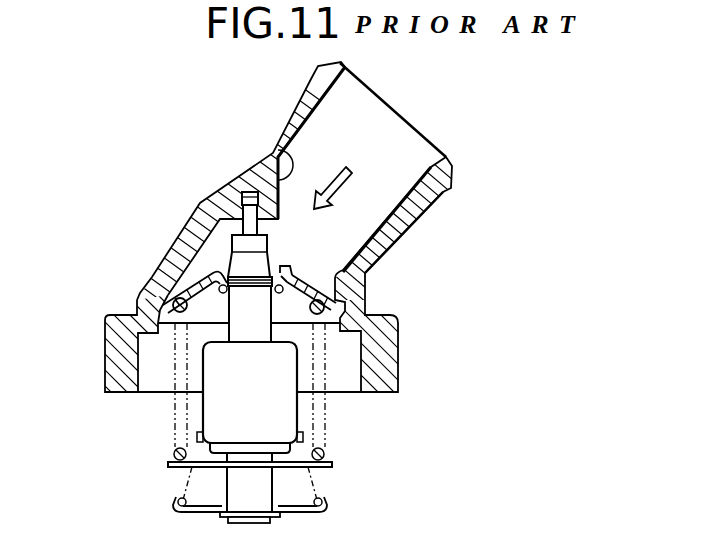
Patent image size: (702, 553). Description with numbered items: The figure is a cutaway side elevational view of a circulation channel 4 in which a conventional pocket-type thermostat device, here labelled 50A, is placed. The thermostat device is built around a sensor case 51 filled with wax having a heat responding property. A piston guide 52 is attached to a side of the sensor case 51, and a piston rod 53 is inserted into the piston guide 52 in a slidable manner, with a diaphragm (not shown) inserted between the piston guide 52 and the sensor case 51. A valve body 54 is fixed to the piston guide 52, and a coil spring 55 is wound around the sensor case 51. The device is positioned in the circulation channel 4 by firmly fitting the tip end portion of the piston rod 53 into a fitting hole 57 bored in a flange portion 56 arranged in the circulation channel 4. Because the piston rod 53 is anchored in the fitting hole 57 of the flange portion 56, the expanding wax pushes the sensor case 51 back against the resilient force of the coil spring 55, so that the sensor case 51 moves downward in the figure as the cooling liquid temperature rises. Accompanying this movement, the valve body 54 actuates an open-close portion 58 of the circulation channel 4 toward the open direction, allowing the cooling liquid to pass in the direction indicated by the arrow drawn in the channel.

The circulation channel 4 is at (410, 207).
The spark plug mounting structure 50A is at (374, 447).
The sensor case 51 is at (203, 415).
The piston guide 52 is at (228, 270).
The piston rod 53 is at (233, 218).
The valve body 54 is at (160, 258).
The coil spring 55 is at (172, 407).
The flange portion 56 is at (282, 133).
The fitting hole 57 is at (244, 200).
The open-close portion 58 is at (137, 290).